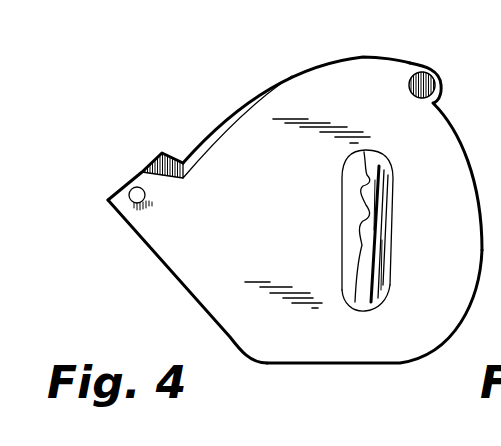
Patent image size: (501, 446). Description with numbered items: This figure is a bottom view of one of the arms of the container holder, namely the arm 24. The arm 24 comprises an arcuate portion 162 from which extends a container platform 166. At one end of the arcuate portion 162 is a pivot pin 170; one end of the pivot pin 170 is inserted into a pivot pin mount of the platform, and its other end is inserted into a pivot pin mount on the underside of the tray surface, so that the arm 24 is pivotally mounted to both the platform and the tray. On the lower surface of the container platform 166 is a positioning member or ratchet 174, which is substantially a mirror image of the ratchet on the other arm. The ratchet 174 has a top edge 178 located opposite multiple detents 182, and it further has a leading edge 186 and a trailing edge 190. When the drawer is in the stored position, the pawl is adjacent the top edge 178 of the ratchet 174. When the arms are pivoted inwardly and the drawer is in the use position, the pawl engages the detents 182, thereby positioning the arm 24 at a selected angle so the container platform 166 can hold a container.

The arm 24 is at (465, 143).
The arcuate portion 162 is at (322, 61).
The container platform 166 is at (292, 353).
The pivot pin 170 is at (143, 193).
The ratchet 174 is at (377, 173).
The top edge 178 is at (377, 233).
The detents 182 is at (368, 177).
The leading edge 186 is at (370, 307).
The trailing edge 190 is at (365, 151).